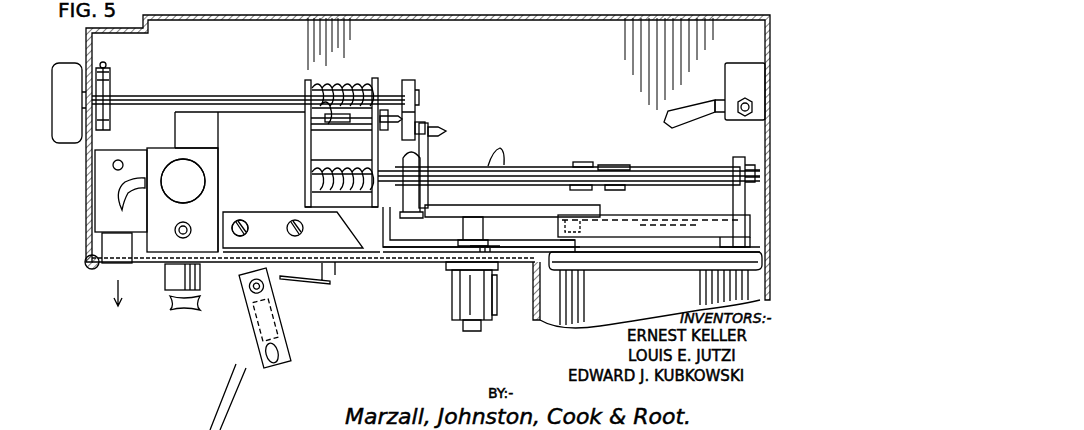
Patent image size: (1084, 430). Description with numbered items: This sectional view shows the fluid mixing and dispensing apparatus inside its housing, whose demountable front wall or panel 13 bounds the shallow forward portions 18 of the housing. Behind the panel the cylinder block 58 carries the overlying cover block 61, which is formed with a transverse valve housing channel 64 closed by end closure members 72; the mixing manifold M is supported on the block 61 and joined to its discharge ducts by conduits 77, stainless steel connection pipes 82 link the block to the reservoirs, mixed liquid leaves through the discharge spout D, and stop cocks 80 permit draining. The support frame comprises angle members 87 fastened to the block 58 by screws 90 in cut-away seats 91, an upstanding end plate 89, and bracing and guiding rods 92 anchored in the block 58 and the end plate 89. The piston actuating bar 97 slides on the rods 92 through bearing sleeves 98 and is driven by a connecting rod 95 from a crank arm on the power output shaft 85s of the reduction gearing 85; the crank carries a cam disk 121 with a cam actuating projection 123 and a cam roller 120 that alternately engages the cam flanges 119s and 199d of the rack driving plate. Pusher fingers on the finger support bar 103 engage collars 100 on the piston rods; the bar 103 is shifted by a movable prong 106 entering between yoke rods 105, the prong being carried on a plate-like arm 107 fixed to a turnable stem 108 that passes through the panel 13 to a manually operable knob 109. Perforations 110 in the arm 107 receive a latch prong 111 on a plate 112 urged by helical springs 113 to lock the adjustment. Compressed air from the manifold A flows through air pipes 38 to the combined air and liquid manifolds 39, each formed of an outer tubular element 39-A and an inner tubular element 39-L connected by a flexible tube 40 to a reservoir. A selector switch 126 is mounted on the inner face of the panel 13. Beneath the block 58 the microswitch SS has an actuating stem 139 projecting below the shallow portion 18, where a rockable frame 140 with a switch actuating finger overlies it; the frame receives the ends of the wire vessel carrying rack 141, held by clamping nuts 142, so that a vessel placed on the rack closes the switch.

The front wall or panel 13 is at (86, 46).
The manually operable knob 109 is at (60, 94).
The selector switch 126 is at (126, 76).
The turnable stem 108 is at (216, 94).
The mixing manifold M is at (134, 149).
The conduits 77 is at (115, 187).
The valve housing channel 64 is at (204, 176).
The end closure members 72 is at (196, 187).
The connection pipes 82 is at (178, 229).
The cover block 61 is at (196, 134).
The cylinder block 58 is at (237, 130).
The discharge spout D is at (96, 246).
The angle members 87 is at (335, 230).
The screws 90 is at (292, 224).
The seats 91 is at (245, 224).
The helical springs 113 is at (346, 120).
The latch prong 111 is at (392, 113).
The prong carrying plate 112 is at (388, 130).
The plate-like arm 107 is at (408, 80).
The perforations 110 is at (420, 110).
The yoke rods 105 is at (417, 122).
The movable prong 106 is at (442, 131).
The finger support bar 103 is at (428, 162).
The piston actuating bar 97 is at (420, 203).
The bearing sleeves 98 is at (481, 227).
The bracing and guiding rods 92 is at (510, 170).
The flexible tube 40 is at (495, 168).
The collars 100 is at (583, 161).
The connecting rod 95 is at (513, 215).
The cam flange 119s is at (560, 246).
The cam actuating projection 123 is at (626, 226).
The cam disk 121 is at (690, 221).
The upstanding end plate 89 is at (745, 158).
The cam flange 199d is at (750, 246).
The manifold A is at (745, 75).
The air pipes 38 is at (690, 126).
The reduction gearing 85 is at (651, 290).
The power output shaft 85s is at (707, 287).
The cam roller 120 is at (580, 270).
The stop cocks 80 is at (170, 274).
The rockable frame 140 is at (248, 326).
The actuating stem 139 is at (322, 284).
The microswitch SS is at (337, 275).
The clamping nuts 142 is at (278, 360).
The vessel carrying rack 141 is at (226, 418).
The combined air and liquid manifolds 39 is at (444, 278).
The outer tubular element 39-A is at (494, 316).
The inner tubular element 39-L is at (476, 332).
The forward portions of the housing 18 is at (365, 280).